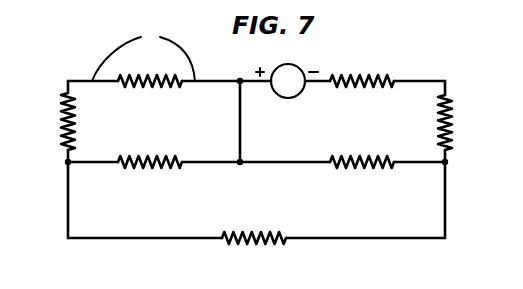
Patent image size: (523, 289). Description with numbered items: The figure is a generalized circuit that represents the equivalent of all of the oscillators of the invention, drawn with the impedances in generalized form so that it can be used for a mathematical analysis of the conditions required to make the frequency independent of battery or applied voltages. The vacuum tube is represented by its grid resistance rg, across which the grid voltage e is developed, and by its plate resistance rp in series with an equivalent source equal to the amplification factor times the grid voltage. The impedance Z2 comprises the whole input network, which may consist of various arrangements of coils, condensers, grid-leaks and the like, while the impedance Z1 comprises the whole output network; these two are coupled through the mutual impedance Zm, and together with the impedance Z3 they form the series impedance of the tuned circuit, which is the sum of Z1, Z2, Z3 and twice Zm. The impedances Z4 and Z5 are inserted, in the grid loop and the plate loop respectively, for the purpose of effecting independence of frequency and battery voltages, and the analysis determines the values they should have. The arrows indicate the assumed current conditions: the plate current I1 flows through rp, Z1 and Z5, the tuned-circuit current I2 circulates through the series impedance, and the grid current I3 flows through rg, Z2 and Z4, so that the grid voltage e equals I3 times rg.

The grid resistance rg is at (150, 69).
The grid voltage e is at (143, 53).
The plate resistance rp is at (362, 69).
The impedance Z4 is at (56, 121).
The impedance Z5 is at (457, 122).
The impedance Z2 is at (150, 177).
The impedance Z1 is at (362, 177).
The impedance Z3 is at (254, 253).
The mutual impedance Zm is at (330, 164).
The current I3 is at (168, 108).
The current I1 is at (385, 105).
The current I2 is at (270, 198).